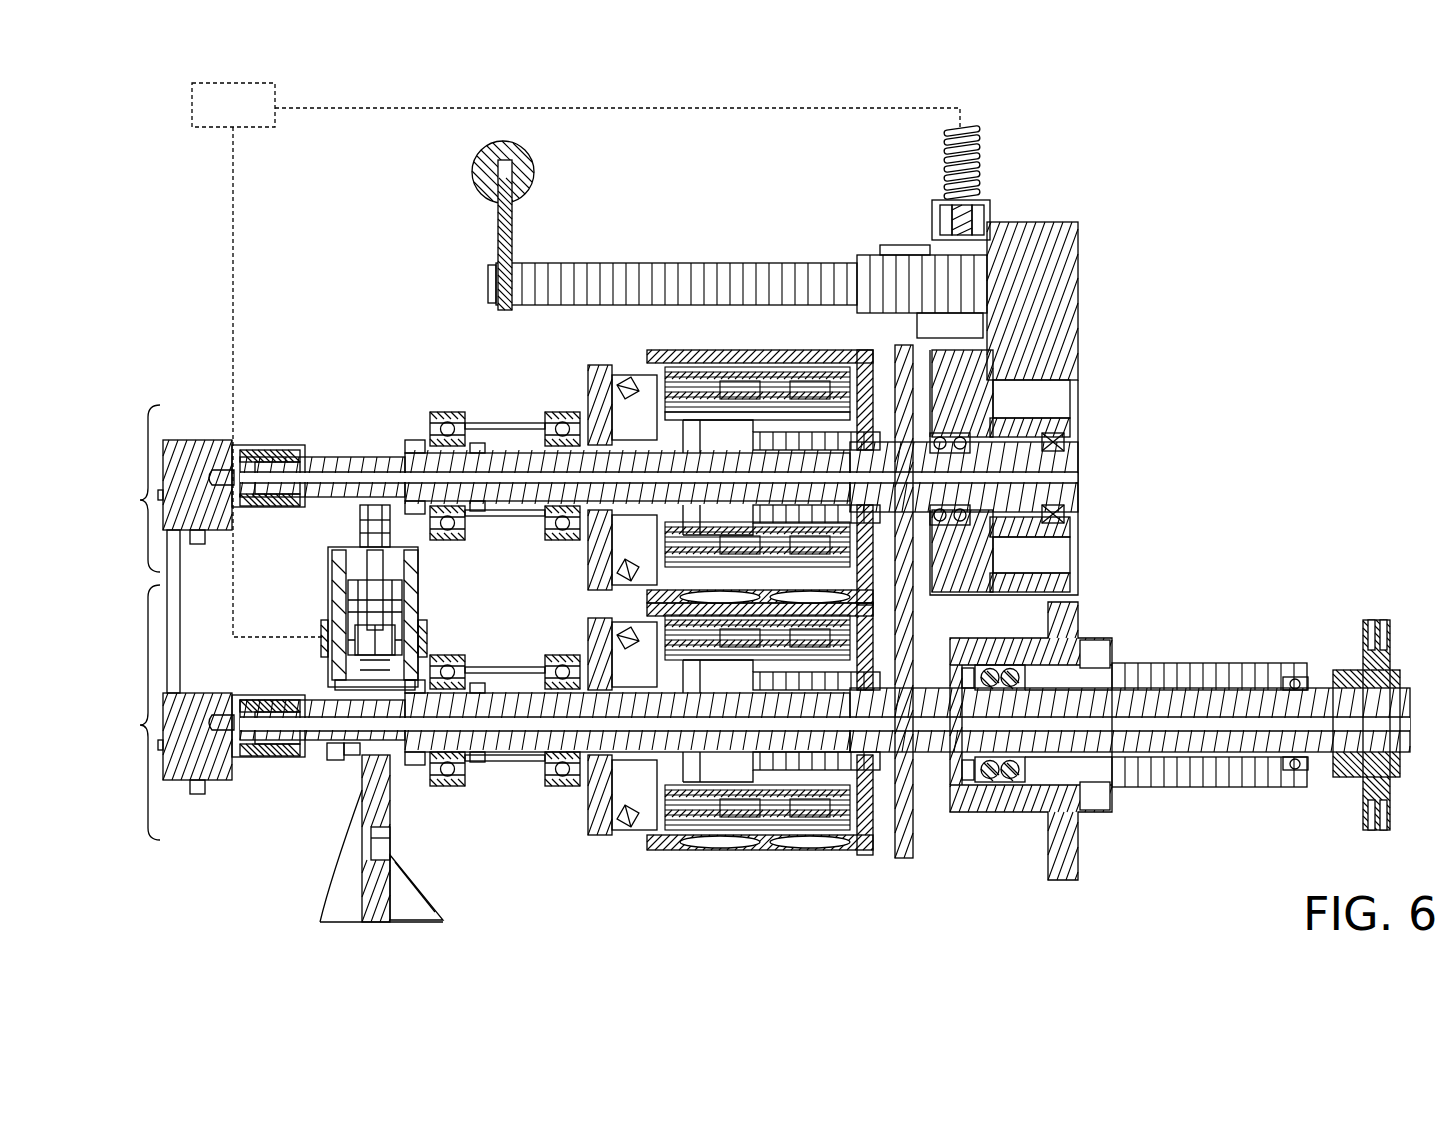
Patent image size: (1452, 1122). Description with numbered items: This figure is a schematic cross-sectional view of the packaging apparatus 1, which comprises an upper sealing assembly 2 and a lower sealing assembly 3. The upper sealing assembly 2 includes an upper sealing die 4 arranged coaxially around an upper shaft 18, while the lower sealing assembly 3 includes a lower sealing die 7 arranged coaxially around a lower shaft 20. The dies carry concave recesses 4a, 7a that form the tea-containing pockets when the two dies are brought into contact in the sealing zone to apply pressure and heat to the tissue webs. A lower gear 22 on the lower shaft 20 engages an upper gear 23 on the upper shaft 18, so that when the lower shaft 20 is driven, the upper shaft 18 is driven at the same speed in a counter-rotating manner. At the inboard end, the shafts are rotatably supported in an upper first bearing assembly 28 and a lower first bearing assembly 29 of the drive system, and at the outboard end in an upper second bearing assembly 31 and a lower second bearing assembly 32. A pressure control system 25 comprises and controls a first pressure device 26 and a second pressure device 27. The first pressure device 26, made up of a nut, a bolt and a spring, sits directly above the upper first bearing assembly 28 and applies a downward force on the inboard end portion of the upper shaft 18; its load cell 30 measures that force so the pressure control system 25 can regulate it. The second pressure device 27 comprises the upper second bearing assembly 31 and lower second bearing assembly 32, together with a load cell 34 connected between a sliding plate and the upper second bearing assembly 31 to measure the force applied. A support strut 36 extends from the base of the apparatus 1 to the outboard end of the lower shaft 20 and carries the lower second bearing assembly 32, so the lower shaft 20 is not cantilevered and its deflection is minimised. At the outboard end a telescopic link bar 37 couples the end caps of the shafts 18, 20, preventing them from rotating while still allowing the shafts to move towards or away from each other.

The packaging apparatus 1 is at (545, 95).
The upper sealing assembly 2 is at (174, 488).
The lower sealing assembly 3 is at (174, 712).
The upper sealing die 4 is at (755, 353).
The concave recess 4a is at (803, 353).
The lower sealing die 7 is at (776, 851).
The concave recess 7a is at (706, 851).
The upper shaft 18 is at (436, 458).
The lower shaft 20 is at (508, 740).
The lower gear 22 is at (1072, 860).
The upper gear 23 is at (905, 552).
The pressure control system 25 is at (257, 360).
The first pressure device 26 is at (990, 164).
The second pressure device 27 is at (322, 591).
The upper first bearing assembly 28 is at (975, 450).
The lower first bearing assembly 29 is at (1010, 670).
The load cell 30 is at (930, 228).
The upper second bearing assembly 31 is at (338, 448).
The lower second bearing assembly 32 is at (326, 772).
The load cell 34 is at (372, 615).
The support strut 36 is at (416, 841).
The link bar 37 is at (170, 595).